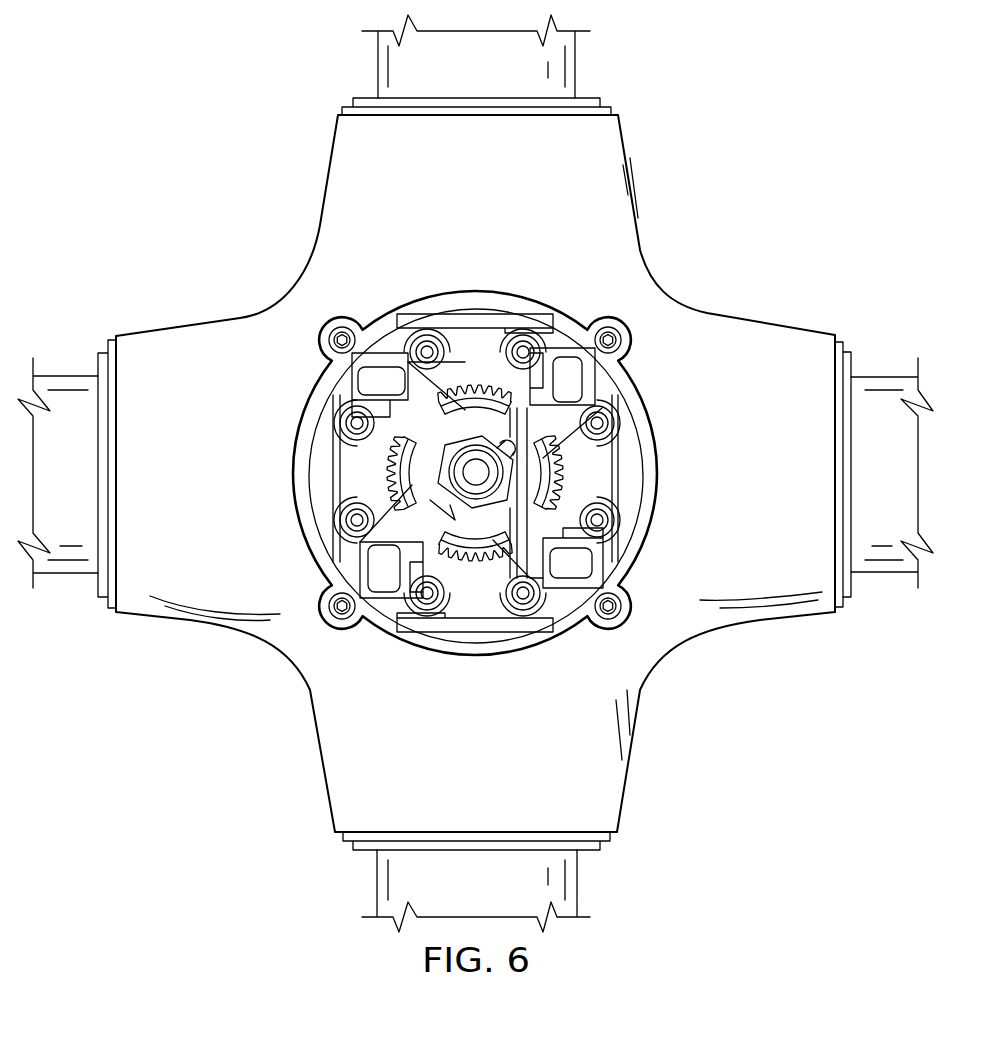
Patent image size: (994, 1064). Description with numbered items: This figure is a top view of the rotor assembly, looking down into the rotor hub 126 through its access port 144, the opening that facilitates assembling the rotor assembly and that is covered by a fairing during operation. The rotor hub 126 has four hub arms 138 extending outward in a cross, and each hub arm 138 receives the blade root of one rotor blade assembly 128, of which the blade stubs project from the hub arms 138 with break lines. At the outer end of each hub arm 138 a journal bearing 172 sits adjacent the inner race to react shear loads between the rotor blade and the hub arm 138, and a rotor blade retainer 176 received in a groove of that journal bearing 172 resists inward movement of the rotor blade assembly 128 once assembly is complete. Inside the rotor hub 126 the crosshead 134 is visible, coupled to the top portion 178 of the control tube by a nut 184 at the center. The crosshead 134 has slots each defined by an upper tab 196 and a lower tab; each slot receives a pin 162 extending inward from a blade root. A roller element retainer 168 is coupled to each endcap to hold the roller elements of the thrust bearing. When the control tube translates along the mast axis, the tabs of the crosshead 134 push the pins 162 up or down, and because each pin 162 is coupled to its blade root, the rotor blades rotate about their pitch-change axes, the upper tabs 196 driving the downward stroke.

The rotor hub 126 is at (254, 304).
The rotor blade assembly 128 is at (372, 68).
The crosshead 134 is at (608, 406).
The hub arm 138 is at (812, 615).
The access port 144 is at (348, 449).
The pin 162 is at (381, 623).
The roller element retainer 168 is at (424, 598).
The journal bearing 172 is at (853, 360).
The rotor blade retainer 176 is at (843, 342).
The top portion 178 is at (495, 472).
The nut 184 is at (448, 453).
The upper tab 196 is at (390, 363).